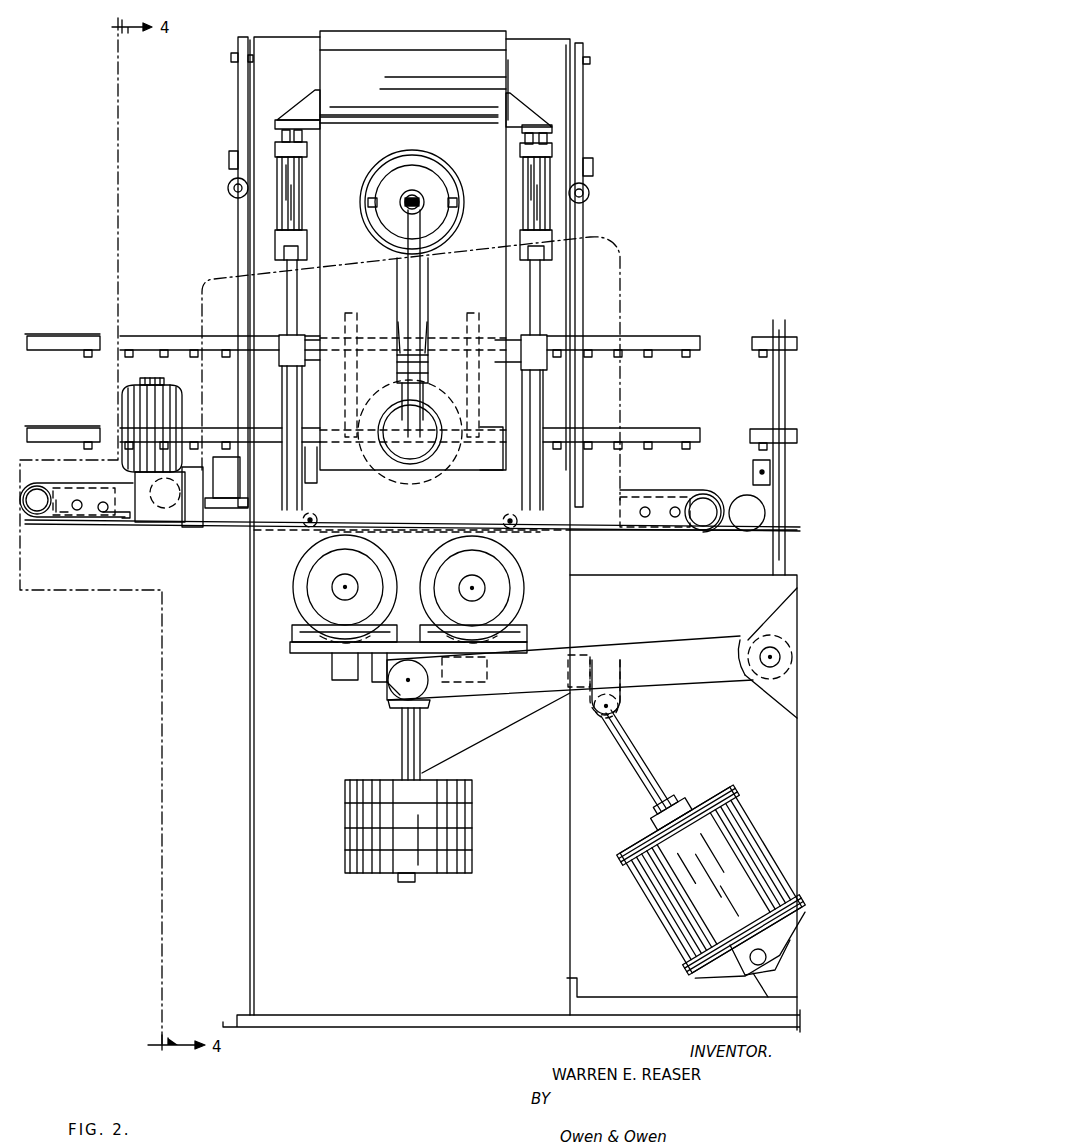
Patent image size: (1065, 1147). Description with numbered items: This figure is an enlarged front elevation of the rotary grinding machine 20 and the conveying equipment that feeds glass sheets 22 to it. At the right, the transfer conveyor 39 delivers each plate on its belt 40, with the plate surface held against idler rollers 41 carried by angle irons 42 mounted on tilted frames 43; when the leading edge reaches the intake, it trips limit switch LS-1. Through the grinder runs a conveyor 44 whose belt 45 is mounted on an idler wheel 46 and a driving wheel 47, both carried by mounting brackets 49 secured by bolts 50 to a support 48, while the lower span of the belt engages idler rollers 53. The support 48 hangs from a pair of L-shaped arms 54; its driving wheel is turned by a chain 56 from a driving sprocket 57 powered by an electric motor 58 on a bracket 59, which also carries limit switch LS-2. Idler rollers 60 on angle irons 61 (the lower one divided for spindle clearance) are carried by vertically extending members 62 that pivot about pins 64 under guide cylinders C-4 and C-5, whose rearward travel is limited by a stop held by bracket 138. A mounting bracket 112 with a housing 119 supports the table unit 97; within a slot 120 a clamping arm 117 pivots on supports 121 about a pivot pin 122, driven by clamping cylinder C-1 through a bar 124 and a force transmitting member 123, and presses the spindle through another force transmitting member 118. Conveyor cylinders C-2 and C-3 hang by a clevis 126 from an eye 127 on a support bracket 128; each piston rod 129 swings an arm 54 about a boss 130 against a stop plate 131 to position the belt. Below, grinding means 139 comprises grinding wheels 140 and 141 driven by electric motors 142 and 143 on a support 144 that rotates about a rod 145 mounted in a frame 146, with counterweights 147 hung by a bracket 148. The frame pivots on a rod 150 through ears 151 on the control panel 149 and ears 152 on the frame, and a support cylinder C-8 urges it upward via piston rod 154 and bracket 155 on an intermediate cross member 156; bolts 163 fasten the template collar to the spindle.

The rotary grinding machine 20 is at (420, 27).
The glass sheet 22 is at (620, 242).
The transfer conveyor 39 is at (772, 309).
The belt 40 is at (760, 525).
The idler rollers 41 is at (770, 362).
The angle irons 42 is at (770, 338).
The frames 43 is at (776, 386).
The conveyor 44 is at (640, 322).
The belt 45 is at (648, 492).
The idler wheel 46 is at (708, 525).
The driving wheel 47 is at (38, 487).
The support 48 is at (585, 532).
The mounting brackets 49 is at (58, 522).
The bolts 50 is at (80, 512).
The idler rollers 53 is at (308, 526).
The L-shaped arms 54 is at (285, 337).
The chain 56 is at (116, 515).
The driving sprocket 57 is at (146, 520).
The electric motor 58 is at (124, 398).
The bracket 59 is at (203, 522).
The idler rollers 60 is at (160, 352).
The angle irons 61 is at (146, 335).
The vertically extending members 62 is at (238, 92).
The pin 64 is at (233, 56).
The table unit 97 is at (432, 470).
The mounting bracket 112 is at (510, 40).
The clamping arm 117 is at (433, 339).
The force transmitting member 118 is at (416, 432).
The housing 119 is at (510, 66).
The slot 120 is at (428, 275).
The supports 121 is at (400, 352).
The pivot pin 122 is at (426, 362).
The force transmitting member 123 is at (422, 205).
The bar 124 is at (420, 195).
The clevis 126 is at (281, 137).
The eye 127 is at (276, 124).
The support bracket 128 is at (304, 100).
The piston rod 129 is at (286, 292).
The boss 130 is at (305, 366).
The stop plate 131 is at (410, 458).
The bracket 138 is at (231, 165).
The grinding means 139 is at (356, 731).
The grinding wheel 140 is at (294, 588).
The grinding wheel 141 is at (524, 585).
The electric motor 142 is at (390, 583).
The electric motor 143 is at (505, 600).
The support 144 is at (310, 652).
The rod 145 is at (420, 700).
The frame 146 is at (665, 640).
The counterweights 147 is at (345, 808).
The bracket 148 is at (400, 712).
The control panel 149 is at (567, 888).
The rod 150 is at (767, 672).
The ears 151 is at (783, 706).
The ears 152 is at (755, 635).
The piston rod 154 is at (622, 750).
The bracket 155 is at (620, 703).
The intermediate cross member 156 is at (578, 650).
The bolts 163 is at (352, 682).
The clamping cylinder C-1 is at (403, 165).
The conveyor cylinder C-2 is at (278, 198).
The conveyor cylinder C-3 is at (552, 219).
The guide cylinder C-4 is at (229, 189).
The guide cylinder C-5 is at (590, 193).
The support cylinder C-8 is at (660, 914).
The limit switch LS-1 is at (753, 476).
The limit switch LS-2 is at (240, 475).